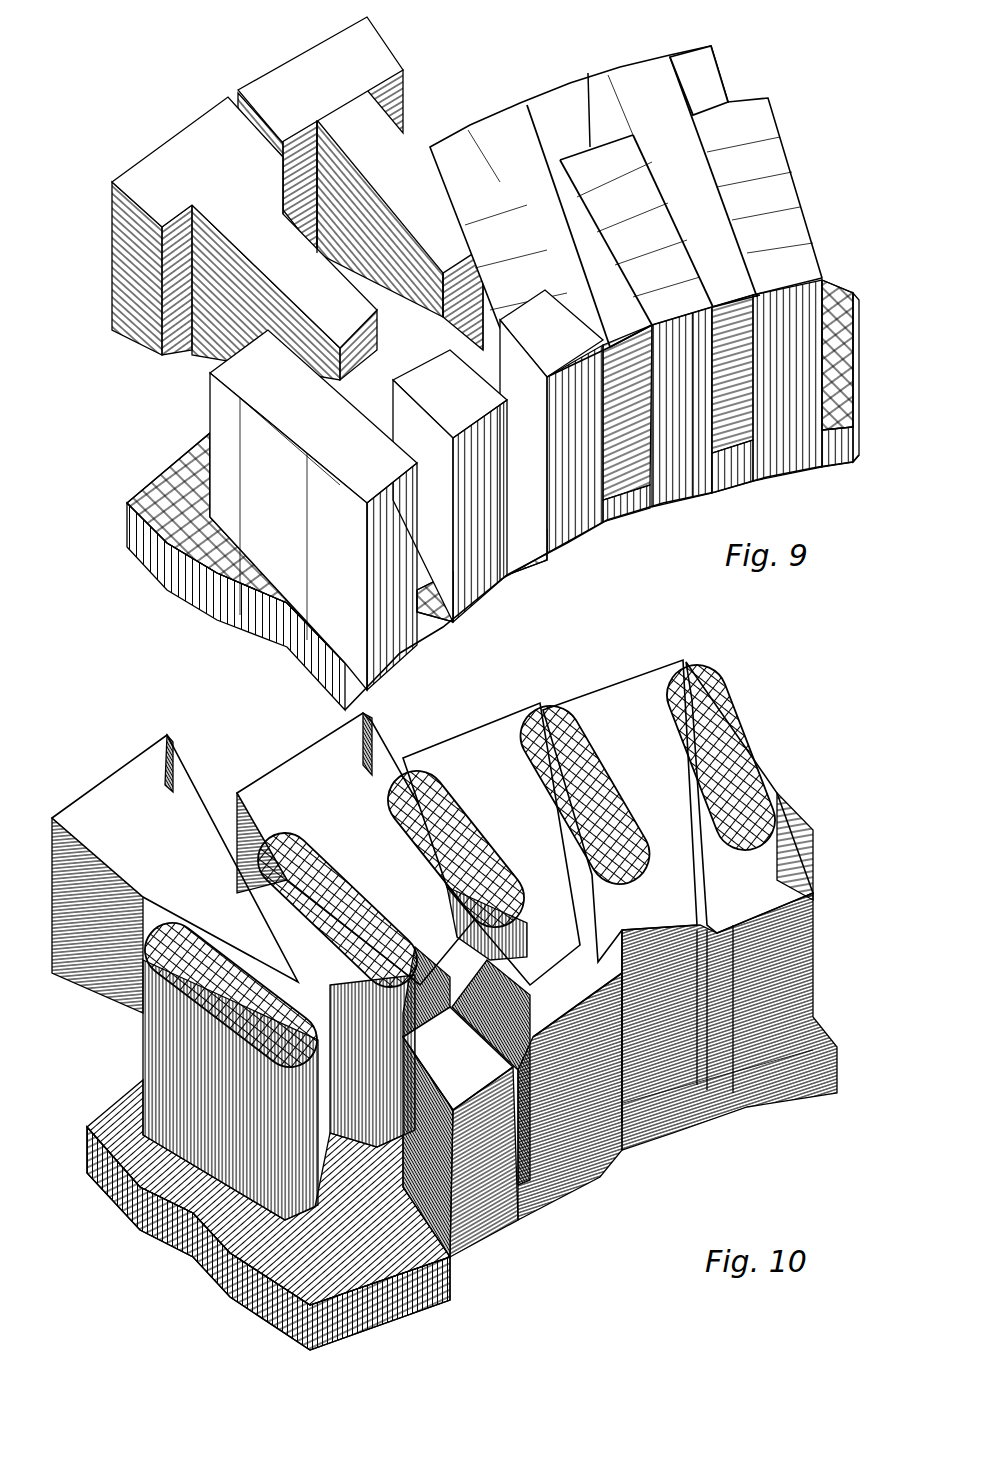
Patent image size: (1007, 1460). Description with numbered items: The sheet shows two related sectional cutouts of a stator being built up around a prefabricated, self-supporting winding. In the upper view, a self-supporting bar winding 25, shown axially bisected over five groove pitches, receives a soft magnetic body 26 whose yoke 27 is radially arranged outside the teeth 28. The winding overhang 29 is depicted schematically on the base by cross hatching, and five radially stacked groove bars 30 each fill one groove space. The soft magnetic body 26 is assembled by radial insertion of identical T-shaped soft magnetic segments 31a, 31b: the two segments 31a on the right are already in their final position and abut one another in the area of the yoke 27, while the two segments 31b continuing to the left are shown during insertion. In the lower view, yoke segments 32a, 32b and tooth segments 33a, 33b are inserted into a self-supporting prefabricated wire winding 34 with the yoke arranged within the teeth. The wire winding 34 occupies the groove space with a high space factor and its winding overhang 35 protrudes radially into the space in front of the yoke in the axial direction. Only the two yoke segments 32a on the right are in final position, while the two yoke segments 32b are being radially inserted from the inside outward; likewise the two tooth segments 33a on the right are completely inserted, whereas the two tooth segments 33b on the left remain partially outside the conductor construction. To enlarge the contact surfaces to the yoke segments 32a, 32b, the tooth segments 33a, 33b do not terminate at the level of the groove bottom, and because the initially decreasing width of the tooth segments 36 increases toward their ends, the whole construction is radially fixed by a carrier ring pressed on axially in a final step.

In FIG. 9, the self-supporting bar winding 25 is at (478, 578).
In FIG. 9, the soft magnetic body 26 is at (568, 80).
In FIG. 9, the yoke 27 is at (730, 73).
In FIG. 9, the teeth 28 is at (705, 225).
In FIG. 9, the winding overhang 29 is at (182, 482).
In FIG. 9, the groove bars 30 is at (768, 202).
In FIG. 9, the T-shaped soft magnetic segments 31a is at (557, 130).
In FIG. 9, the T-shaped soft magnetic segments 31b is at (320, 80).
In FIG. 10, the yoke segments 32a is at (773, 1003).
In FIG. 10, the yoke segments 32b is at (567, 1100).
In FIG. 10, the tooth segments 33a is at (643, 743).
In FIG. 10, the tooth segments 33b is at (343, 822).
In FIG. 10, the self-supporting wire winding 34 is at (128, 1070).
In FIG. 10, the winding overhang 35 is at (313, 1257).
In FIG. 10, the tooth segments 36 is at (727, 936).